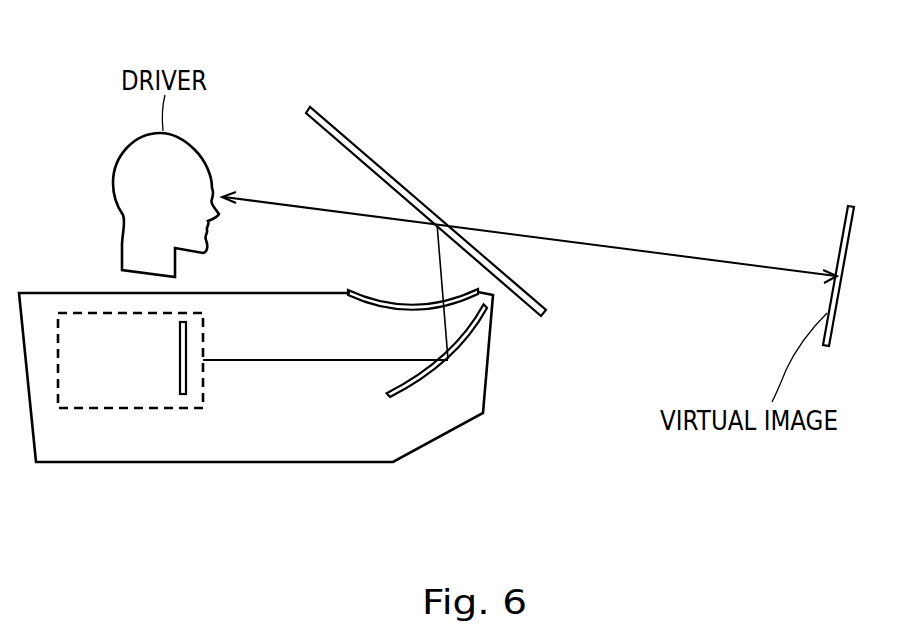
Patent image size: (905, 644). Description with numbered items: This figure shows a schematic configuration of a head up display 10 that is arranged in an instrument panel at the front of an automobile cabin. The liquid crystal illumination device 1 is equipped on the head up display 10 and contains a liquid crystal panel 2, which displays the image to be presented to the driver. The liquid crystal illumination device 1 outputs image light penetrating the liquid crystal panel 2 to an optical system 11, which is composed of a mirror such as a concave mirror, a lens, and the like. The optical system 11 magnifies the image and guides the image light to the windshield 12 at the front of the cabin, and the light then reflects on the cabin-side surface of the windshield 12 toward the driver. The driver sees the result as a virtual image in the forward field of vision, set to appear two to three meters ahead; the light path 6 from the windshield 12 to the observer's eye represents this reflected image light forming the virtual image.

The head up display 10 is at (87, 31).
The liquid crystal illumination device 1 is at (110, 409).
The liquid crystal panel 2 is at (179, 352).
The optical system 11 is at (470, 350).
The windshield 12 is at (355, 143).
The display light / virtual image light path 6 is at (601, 240).